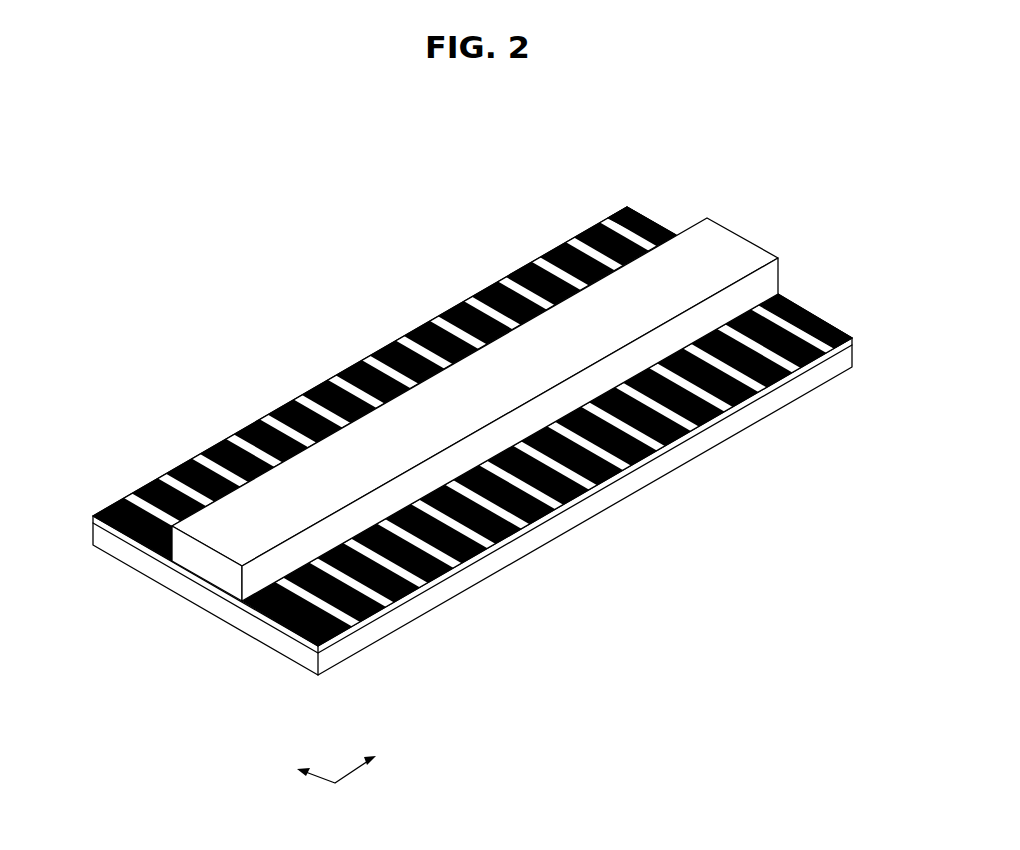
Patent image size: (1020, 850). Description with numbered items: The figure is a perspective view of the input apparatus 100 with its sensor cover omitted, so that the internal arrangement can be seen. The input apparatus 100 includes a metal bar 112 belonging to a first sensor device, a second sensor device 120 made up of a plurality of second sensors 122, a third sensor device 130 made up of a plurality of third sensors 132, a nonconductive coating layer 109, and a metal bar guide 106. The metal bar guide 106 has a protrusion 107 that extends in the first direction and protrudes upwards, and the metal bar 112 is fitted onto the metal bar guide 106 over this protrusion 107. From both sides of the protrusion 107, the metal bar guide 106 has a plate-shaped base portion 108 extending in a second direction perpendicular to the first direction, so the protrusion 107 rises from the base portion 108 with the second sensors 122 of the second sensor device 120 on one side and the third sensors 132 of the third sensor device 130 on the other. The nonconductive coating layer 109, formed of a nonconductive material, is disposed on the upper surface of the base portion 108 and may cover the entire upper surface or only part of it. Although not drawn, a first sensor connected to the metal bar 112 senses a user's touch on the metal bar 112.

The input apparatus 100 is at (413, 194).
The metal bar guide 106 is at (203, 665).
The protrusion 107 is at (208, 568).
The base portion 108 is at (254, 622).
The nonconductive coating layer 109 is at (118, 540).
The metal bar 112 is at (730, 253).
The second sensor device 120 is at (655, 210).
The second sensors 122 is at (610, 229).
The third sensor device 130 is at (840, 318).
The third sensors 132 is at (787, 330).